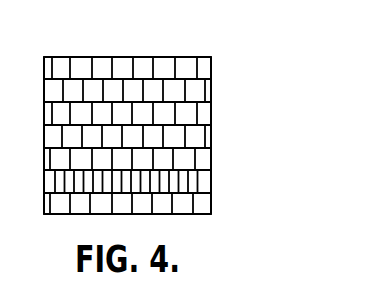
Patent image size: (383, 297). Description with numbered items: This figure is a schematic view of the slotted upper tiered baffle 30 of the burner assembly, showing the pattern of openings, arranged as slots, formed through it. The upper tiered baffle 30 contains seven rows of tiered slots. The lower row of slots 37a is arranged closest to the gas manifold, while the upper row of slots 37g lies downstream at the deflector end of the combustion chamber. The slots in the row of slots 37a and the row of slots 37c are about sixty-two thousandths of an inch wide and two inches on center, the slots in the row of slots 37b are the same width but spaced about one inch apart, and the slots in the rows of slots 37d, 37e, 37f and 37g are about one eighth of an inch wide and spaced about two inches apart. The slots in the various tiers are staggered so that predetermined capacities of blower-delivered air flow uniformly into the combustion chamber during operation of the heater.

The upper tiered baffle 30 is at (217, 137).
The lower row of slots 37a is at (211, 203).
The row of slots 37b is at (211, 183).
The row of slots 37c is at (211, 157).
The row of slots 37d is at (211, 128).
The row of slots 37e is at (212, 104).
The row of slots 37f is at (212, 78).
The upper row of slots 37g is at (211, 59).